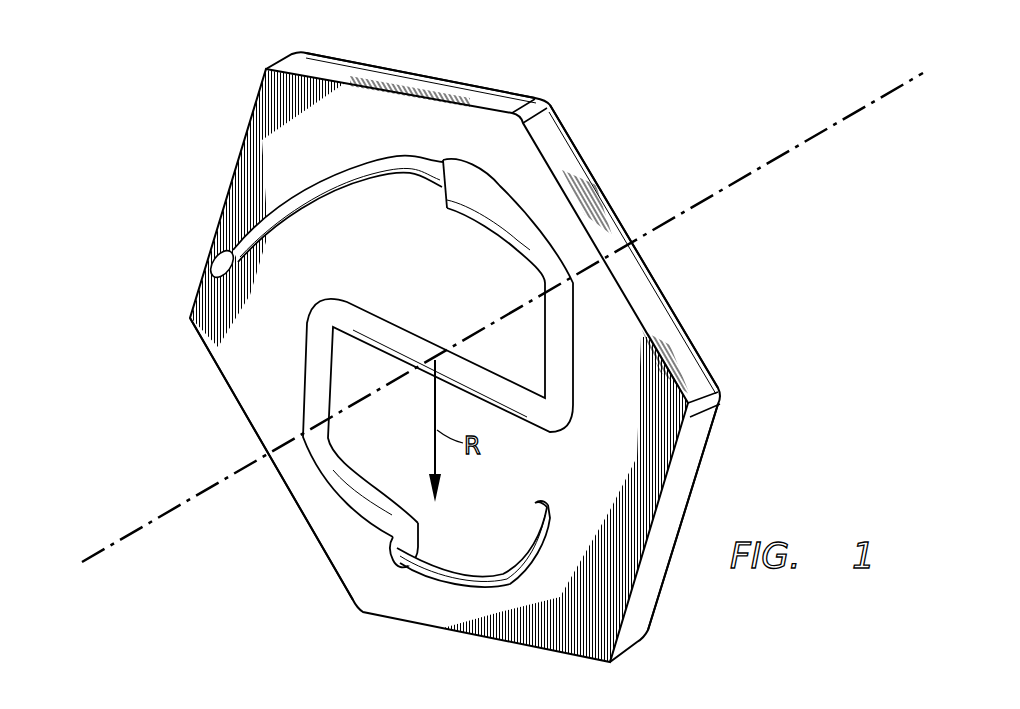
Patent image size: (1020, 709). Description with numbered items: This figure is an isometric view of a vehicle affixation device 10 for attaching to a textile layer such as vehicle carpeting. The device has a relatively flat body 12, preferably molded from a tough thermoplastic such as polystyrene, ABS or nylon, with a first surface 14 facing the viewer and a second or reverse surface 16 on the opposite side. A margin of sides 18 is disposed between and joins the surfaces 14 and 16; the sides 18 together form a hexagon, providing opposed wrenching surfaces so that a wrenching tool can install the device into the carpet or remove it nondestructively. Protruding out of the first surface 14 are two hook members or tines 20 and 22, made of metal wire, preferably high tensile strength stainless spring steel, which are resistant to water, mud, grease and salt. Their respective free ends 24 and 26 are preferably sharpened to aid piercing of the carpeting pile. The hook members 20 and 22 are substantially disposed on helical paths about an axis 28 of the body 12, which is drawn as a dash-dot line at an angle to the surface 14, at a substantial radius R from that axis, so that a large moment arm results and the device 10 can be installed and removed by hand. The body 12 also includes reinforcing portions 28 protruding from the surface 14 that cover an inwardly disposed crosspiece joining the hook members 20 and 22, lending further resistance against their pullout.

The vehicle affixation device 10 is at (624, 113).
The body 12 is at (500, 88).
The first surface 14 is at (232, 360).
The second or reverse surface 16 is at (640, 292).
The sides 18 is at (334, 62).
The hook member 20 is at (380, 168).
The hook member 22 is at (450, 576).
The free end 24 is at (214, 262).
The free end 26 is at (541, 508).
The axis / reinforcing portions 28 is at (470, 185).